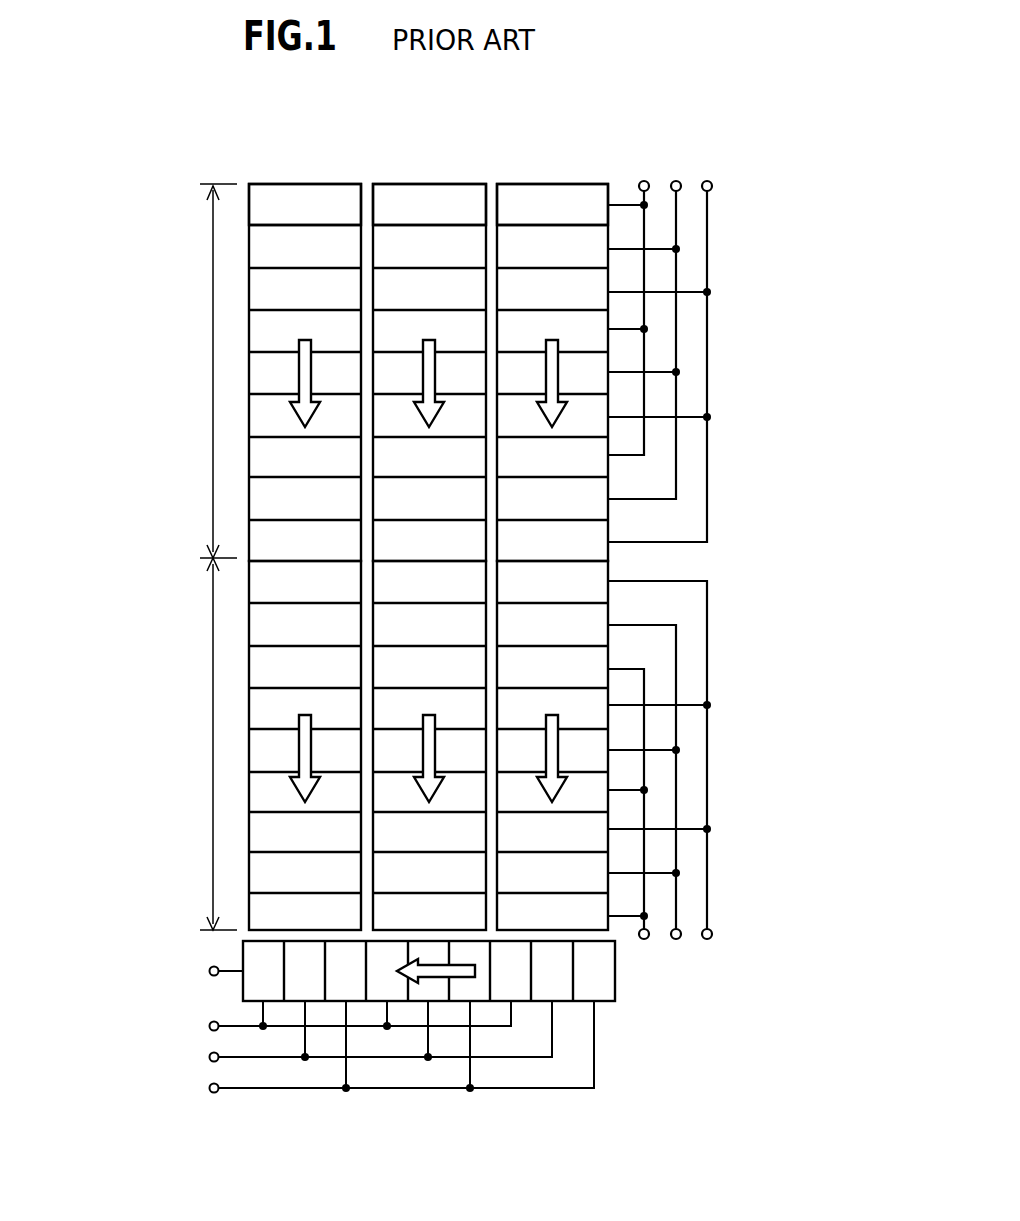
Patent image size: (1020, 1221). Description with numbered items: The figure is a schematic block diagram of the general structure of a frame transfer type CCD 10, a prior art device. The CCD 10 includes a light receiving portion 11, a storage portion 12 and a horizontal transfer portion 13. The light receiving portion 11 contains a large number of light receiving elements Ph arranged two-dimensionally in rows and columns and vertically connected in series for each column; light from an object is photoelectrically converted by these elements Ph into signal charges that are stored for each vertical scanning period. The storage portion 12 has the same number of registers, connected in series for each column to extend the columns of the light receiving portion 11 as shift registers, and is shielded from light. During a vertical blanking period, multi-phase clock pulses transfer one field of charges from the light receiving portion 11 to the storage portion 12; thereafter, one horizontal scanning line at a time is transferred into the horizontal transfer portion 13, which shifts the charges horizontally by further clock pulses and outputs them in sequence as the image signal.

The CCD 10 is at (742, 432).
The light receiving portion 11 is at (116, 416).
The storage portion 12 is at (118, 762).
The horizontal transfer portion 13 is at (236, 955).
The light receiving elements Ph is at (318, 184).